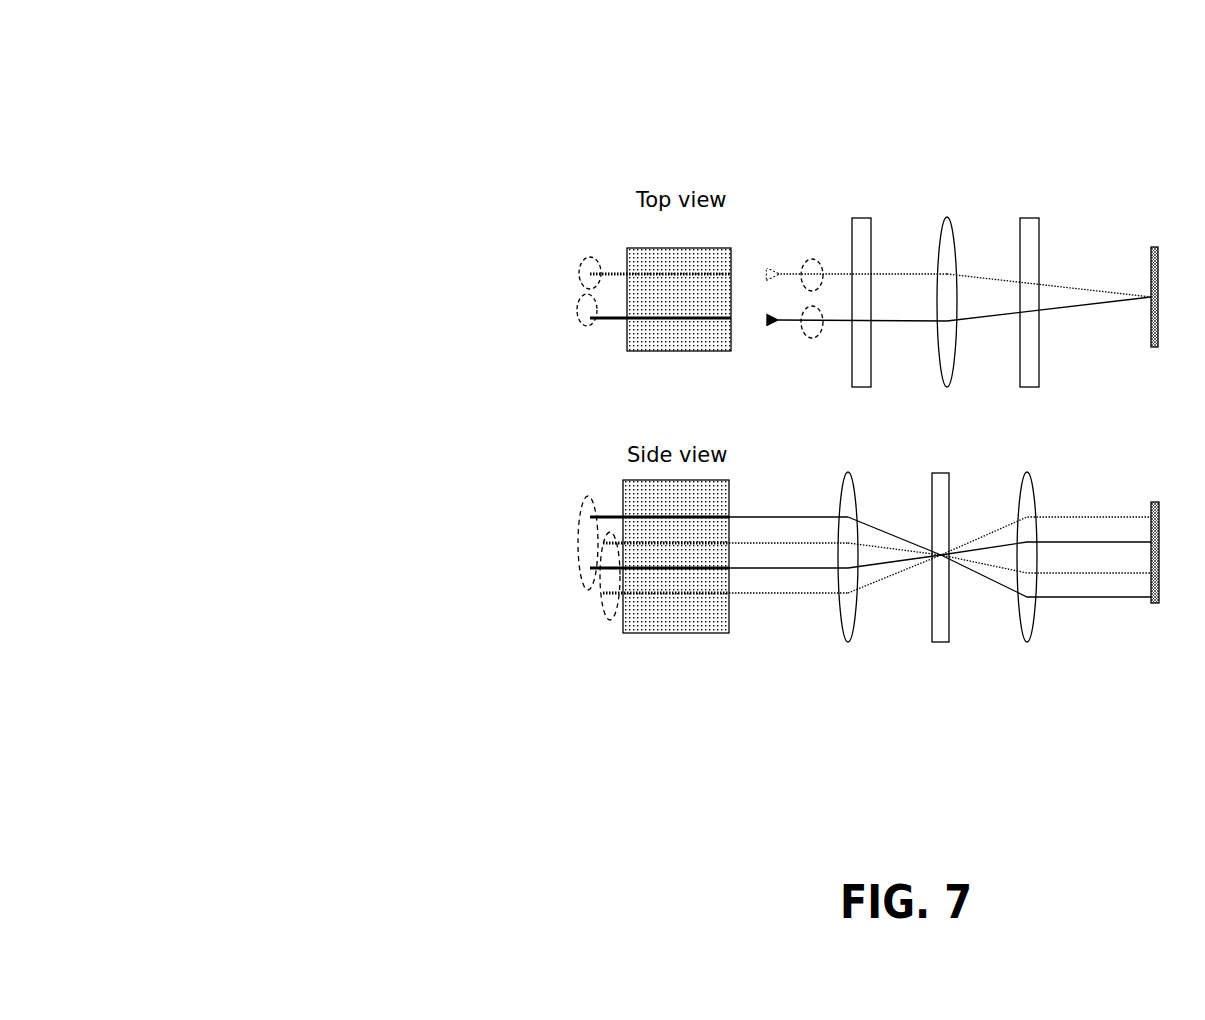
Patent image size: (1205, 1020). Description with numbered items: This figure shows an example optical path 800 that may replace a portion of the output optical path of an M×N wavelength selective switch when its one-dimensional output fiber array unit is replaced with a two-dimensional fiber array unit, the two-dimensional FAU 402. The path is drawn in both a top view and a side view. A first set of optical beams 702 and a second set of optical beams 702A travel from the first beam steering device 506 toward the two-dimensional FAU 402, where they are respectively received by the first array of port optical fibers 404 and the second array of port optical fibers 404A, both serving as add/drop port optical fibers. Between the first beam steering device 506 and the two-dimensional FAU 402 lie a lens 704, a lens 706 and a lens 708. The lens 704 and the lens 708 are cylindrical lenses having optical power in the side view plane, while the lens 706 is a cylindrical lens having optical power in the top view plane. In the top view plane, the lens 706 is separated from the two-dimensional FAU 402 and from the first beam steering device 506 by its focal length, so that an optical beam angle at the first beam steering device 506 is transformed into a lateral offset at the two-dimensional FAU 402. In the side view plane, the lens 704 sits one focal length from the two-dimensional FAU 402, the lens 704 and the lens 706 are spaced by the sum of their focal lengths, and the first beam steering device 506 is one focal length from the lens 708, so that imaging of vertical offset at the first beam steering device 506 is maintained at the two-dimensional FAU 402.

The optical system 800 is at (362, 48).
The 2D FAU 402 is at (628, 333).
The first array of port optical fibers 404 is at (576, 312).
The second array of port optical fibers 404A is at (568, 268).
The first set of optical beams 702 is at (805, 347).
The second set of optical beams 702A is at (817, 252).
The lens 704 is at (855, 449).
The lens 706 is at (939, 448).
The lens 708 is at (1023, 449).
The first beam steering device 506 is at (1154, 440).